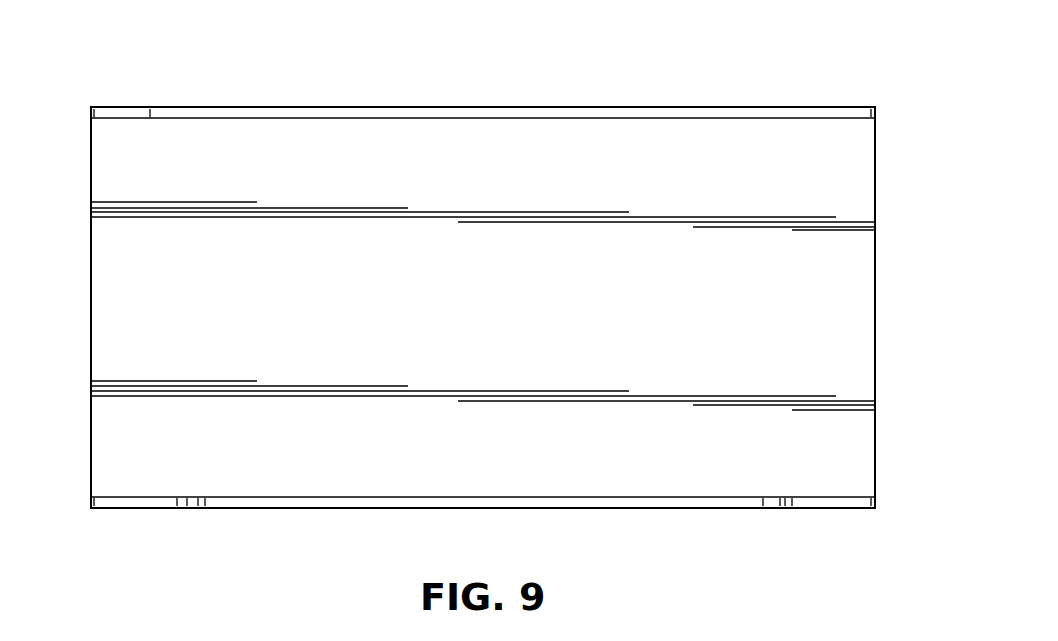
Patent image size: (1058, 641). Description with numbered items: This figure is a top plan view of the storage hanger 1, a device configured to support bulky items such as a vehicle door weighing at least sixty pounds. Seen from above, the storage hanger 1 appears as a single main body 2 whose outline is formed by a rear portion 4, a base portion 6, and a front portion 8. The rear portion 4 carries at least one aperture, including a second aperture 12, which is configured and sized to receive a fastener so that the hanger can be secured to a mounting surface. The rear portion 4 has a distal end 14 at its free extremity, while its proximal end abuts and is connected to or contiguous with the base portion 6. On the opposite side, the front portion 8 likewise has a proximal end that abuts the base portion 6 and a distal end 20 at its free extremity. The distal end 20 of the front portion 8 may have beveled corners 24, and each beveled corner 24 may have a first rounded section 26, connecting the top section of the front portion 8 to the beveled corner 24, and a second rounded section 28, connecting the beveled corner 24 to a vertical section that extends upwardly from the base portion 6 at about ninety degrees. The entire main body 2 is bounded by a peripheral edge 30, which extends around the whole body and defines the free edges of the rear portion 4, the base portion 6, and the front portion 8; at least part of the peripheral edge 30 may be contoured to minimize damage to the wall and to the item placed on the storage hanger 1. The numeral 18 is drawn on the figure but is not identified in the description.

The storage hanger 1 is at (73, 238).
The main body 2 is at (90, 427).
The rear portion 4 is at (557, 107).
The base portion 6 is at (832, 308).
The front portion 8 is at (663, 502).
The second aperture 12 is at (284, 99).
The distal end 14 is at (747, 99).
The corner 18 is at (873, 93).
The distal end 20 is at (318, 516).
The beveled corners 24 is at (122, 513).
The first rounded section 26 is at (783, 516).
The second rounded section 28 is at (877, 516).
The peripheral edge 30 is at (198, 107).